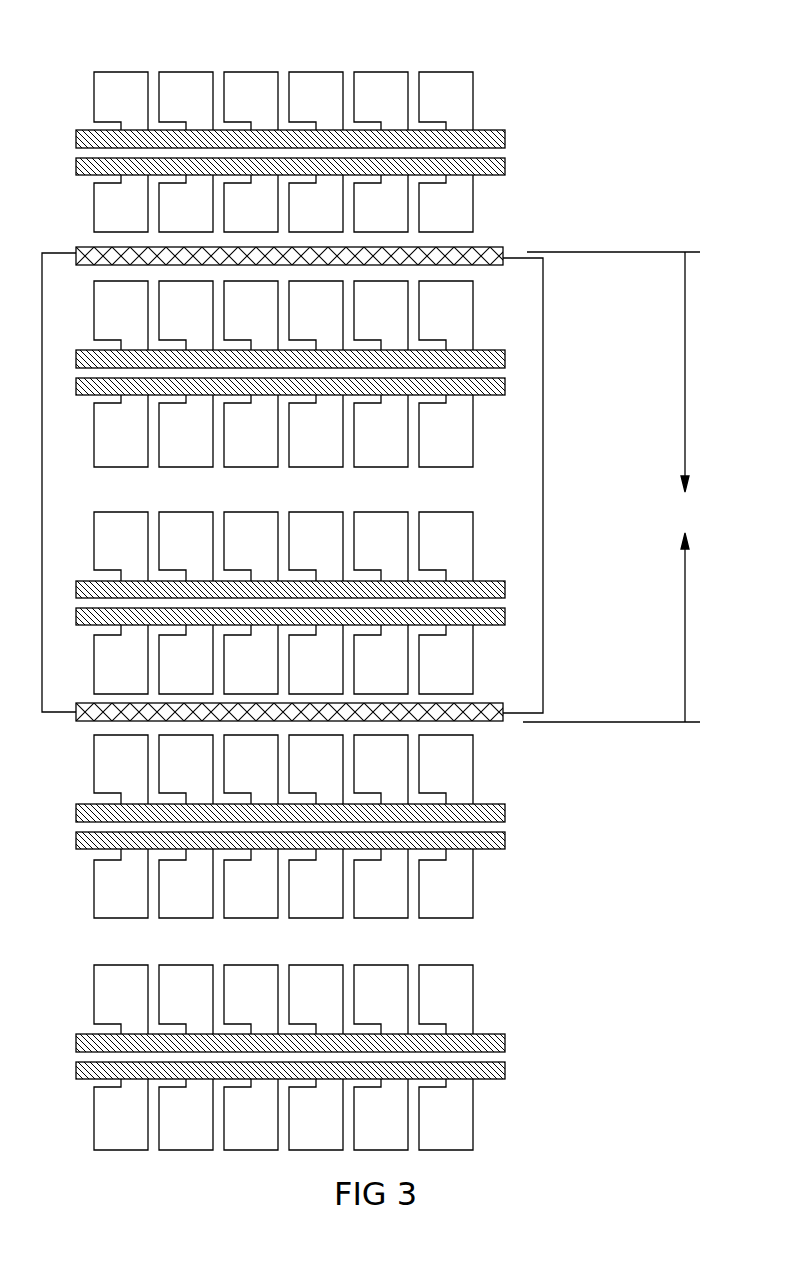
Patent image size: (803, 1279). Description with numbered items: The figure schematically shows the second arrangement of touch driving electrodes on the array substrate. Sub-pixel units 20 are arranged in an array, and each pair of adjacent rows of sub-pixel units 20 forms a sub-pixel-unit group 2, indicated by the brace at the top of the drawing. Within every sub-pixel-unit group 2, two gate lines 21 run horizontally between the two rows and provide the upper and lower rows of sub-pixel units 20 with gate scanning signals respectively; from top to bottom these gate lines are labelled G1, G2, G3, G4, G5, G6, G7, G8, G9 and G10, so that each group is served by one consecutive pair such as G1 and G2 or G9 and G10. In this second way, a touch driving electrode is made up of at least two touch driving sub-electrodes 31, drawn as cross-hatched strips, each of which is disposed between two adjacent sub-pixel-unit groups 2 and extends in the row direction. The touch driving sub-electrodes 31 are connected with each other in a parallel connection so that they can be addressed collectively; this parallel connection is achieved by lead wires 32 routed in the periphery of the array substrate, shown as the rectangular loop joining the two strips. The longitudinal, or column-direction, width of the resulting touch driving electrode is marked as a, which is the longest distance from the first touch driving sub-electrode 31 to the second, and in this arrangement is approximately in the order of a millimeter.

The sub-pixel-unit group 2 is at (97, 72).
The sub-pixel unit 20 is at (433, 104).
The gate line 21 is at (310, 189).
The touch driving sub-electrode 31 is at (503, 248).
The lead wire 32 is at (543, 482).
The gate line G1 is at (306, 141).
The gate line G2 is at (306, 168).
The gate line G3 is at (306, 361).
The gate line G4 is at (306, 388).
The gate line G5 is at (306, 591).
The gate line G6 is at (306, 618).
The gate line G7 is at (306, 815).
The gate line G8 is at (306, 842).
The gate line G9 is at (306, 1045).
The gate line G10 is at (312, 1072).
The longitudinal width of the touch driving electrode a is at (611, 487).